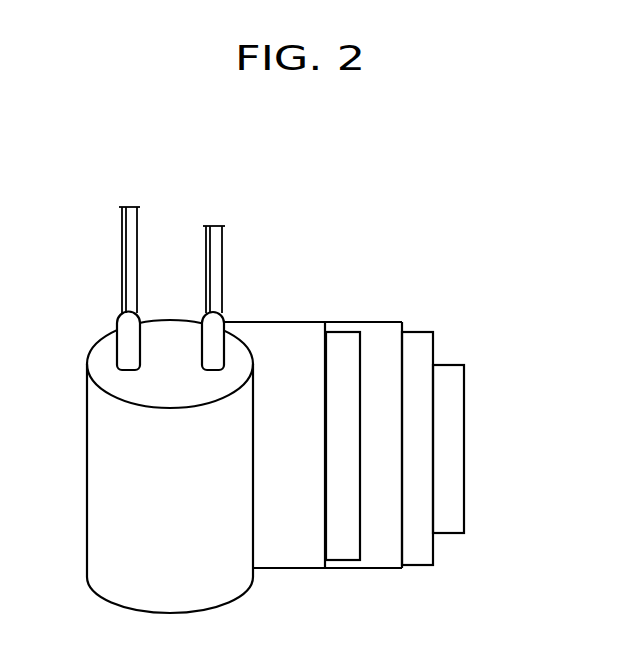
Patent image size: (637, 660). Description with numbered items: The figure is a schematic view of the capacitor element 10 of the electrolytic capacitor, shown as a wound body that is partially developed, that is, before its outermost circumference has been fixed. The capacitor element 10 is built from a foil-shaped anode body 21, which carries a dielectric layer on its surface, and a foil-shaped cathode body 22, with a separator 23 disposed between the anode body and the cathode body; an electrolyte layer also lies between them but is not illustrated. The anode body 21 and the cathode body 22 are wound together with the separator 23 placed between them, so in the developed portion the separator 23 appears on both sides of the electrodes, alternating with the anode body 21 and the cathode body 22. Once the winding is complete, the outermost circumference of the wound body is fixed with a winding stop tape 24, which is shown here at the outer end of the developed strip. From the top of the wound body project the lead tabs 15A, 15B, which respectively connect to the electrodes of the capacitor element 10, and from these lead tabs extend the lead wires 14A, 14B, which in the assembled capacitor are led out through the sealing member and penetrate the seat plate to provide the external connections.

The capacitor element 10 is at (325, 209).
The lead wire 14A is at (126, 239).
The lead wire 14B is at (224, 237).
The lead tab 15A is at (126, 325).
The lead tab 15B is at (246, 325).
The anode body 21 is at (348, 545).
The cathode body 22 is at (417, 555).
The separator 23 is at (298, 545).
The winding stop tape 24 is at (447, 524).